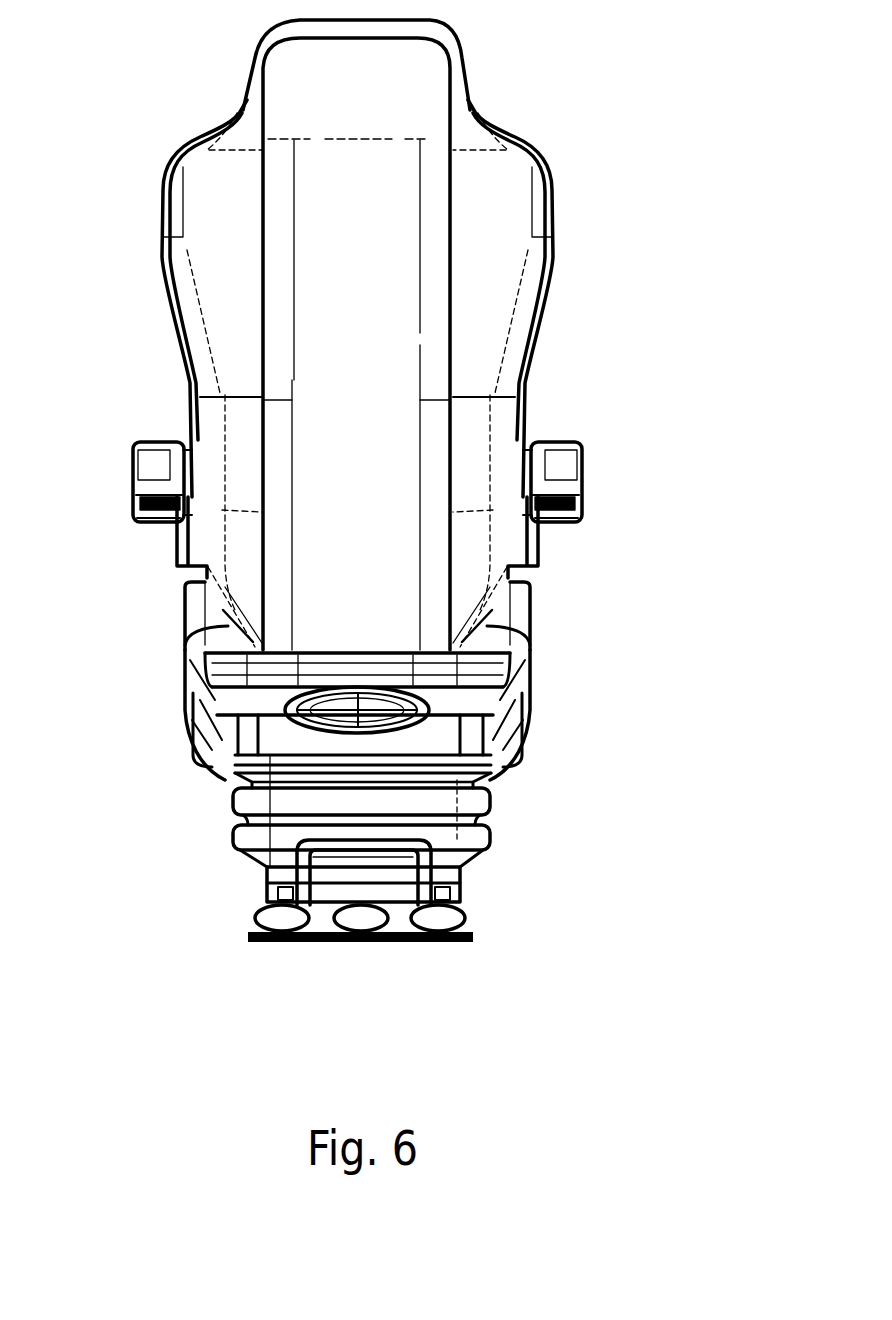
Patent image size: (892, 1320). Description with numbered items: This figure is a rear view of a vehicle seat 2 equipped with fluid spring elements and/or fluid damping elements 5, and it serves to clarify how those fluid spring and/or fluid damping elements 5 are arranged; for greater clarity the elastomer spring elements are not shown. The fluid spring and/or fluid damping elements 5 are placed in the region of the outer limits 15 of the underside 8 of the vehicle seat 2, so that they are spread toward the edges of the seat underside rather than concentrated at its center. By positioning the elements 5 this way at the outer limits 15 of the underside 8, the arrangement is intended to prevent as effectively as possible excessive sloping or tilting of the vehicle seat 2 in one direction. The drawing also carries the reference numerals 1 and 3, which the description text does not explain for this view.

The seat substructure 1 is at (415, 911).
The vehicle seat 2 is at (642, 203).
The floor rail 3 is at (320, 943).
The fluid spring and/or fluid damping elements 5 is at (255, 920).
The underside 8 is at (393, 903).
The outer limits 15 is at (255, 902).